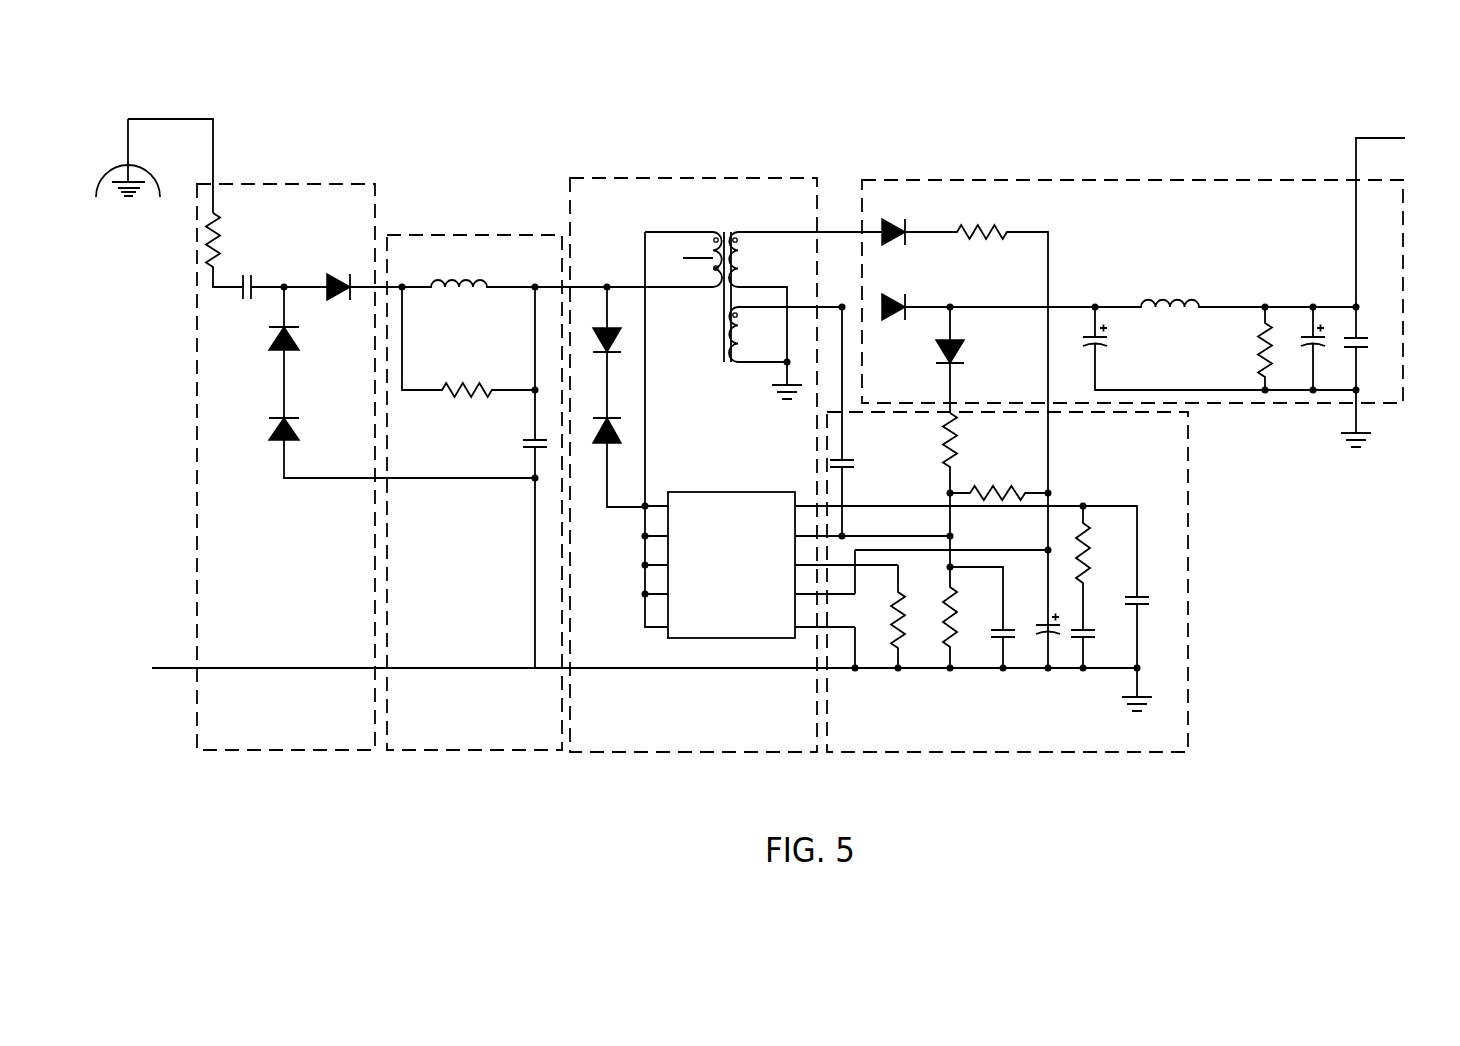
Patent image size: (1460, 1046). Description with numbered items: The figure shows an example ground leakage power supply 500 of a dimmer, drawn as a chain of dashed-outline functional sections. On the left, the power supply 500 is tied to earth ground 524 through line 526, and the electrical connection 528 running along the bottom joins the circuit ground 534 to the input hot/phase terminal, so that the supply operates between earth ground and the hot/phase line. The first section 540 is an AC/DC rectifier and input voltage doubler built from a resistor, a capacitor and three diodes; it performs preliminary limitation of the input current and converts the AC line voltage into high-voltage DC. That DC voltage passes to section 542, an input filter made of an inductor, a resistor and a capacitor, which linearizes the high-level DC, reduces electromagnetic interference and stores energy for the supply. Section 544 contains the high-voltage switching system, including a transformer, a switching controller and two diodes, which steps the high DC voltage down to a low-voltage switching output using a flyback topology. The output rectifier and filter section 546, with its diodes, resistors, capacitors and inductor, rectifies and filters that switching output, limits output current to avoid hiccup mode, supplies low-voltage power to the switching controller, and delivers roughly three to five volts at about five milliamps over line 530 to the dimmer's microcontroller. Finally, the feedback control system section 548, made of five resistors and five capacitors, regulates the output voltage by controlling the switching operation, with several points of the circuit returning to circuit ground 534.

The power supply 500 is at (912, 97).
The earth ground 524 is at (128, 197).
The line 526 is at (195, 118).
The electrical connection 528 is at (173, 668).
The line 530 is at (1368, 138).
The circuit ground 534 is at (762, 416).
The first section 540 is at (337, 750).
The input filter section 542 is at (513, 750).
The high voltage switching system section 544 is at (757, 753).
The output rectifier and filter section 546 is at (1040, 180).
The feedback control system section 548 is at (1073, 753).